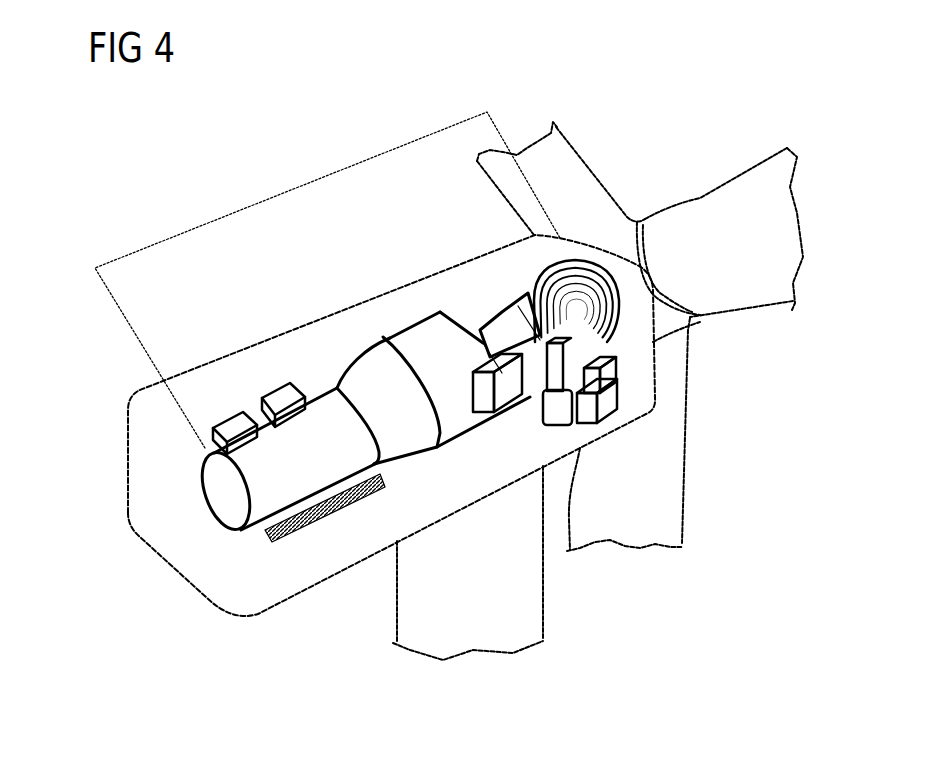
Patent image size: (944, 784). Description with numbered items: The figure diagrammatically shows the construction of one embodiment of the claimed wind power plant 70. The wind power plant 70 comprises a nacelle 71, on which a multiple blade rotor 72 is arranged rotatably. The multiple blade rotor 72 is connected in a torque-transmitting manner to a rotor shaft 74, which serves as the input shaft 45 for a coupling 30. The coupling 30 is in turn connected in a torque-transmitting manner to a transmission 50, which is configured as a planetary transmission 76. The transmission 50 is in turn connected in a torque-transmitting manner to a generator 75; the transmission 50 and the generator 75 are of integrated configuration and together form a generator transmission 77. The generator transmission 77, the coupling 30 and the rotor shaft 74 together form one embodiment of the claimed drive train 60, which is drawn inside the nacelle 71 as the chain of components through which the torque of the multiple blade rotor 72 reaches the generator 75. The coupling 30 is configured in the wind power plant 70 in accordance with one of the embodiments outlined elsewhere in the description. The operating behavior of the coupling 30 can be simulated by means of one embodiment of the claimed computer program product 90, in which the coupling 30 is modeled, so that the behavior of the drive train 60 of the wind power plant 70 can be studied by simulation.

The wind power plant 70 is at (317, 97).
The drive train 60 is at (297, 186).
The nacelle 71 is at (283, 335).
The multiple blade rotor 72 is at (672, 487).
The generator 75 is at (222, 503).
The transmission 50 is at (456, 344).
The planetary transmission 76 is at (456, 344).
The generator transmission 77 is at (456, 344).
The computer program product 90 is at (417, 323).
The coupling 30 is at (515, 305).
The rotor shaft 74 is at (663, 331).
The input shaft 45 is at (612, 326).